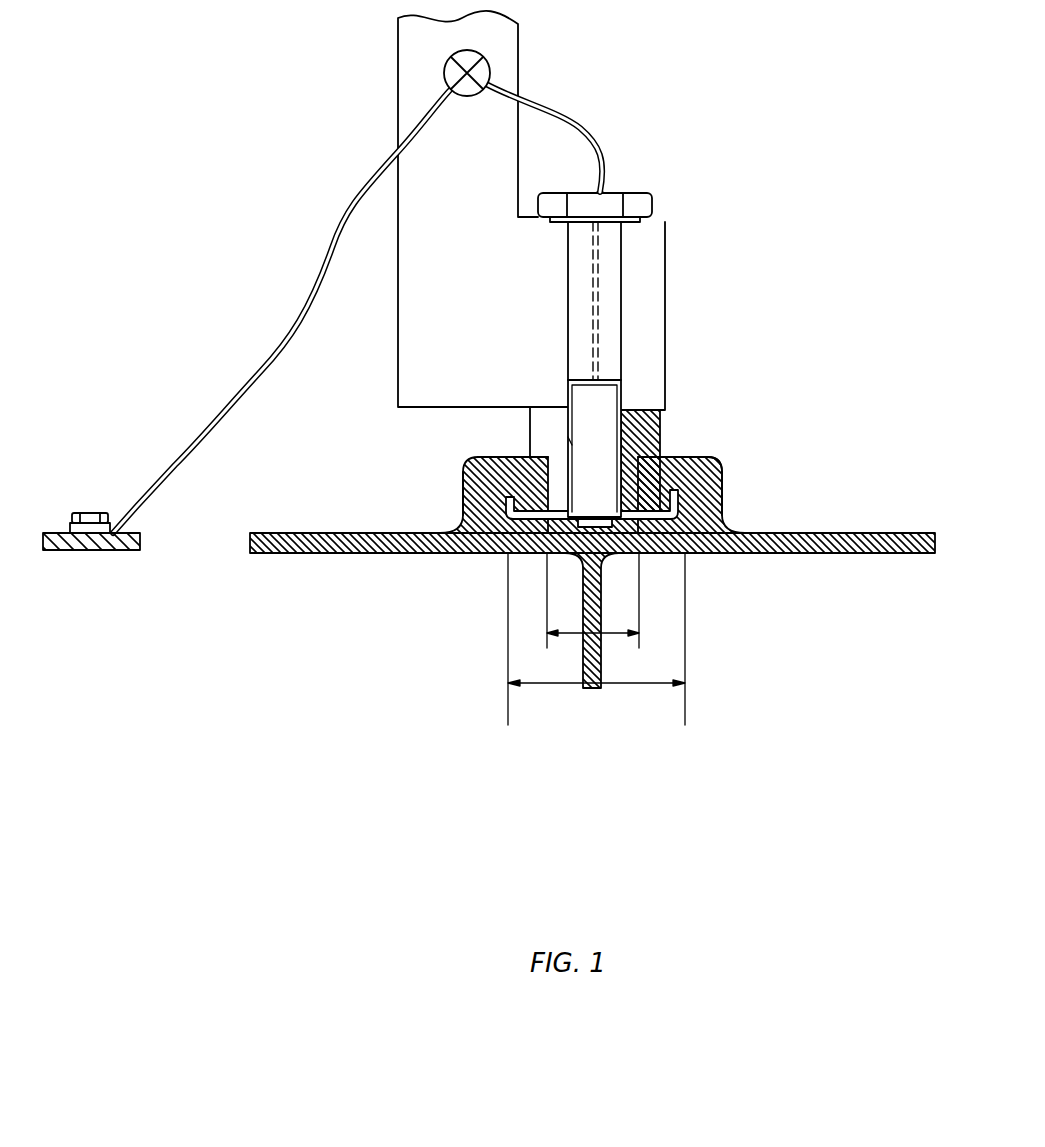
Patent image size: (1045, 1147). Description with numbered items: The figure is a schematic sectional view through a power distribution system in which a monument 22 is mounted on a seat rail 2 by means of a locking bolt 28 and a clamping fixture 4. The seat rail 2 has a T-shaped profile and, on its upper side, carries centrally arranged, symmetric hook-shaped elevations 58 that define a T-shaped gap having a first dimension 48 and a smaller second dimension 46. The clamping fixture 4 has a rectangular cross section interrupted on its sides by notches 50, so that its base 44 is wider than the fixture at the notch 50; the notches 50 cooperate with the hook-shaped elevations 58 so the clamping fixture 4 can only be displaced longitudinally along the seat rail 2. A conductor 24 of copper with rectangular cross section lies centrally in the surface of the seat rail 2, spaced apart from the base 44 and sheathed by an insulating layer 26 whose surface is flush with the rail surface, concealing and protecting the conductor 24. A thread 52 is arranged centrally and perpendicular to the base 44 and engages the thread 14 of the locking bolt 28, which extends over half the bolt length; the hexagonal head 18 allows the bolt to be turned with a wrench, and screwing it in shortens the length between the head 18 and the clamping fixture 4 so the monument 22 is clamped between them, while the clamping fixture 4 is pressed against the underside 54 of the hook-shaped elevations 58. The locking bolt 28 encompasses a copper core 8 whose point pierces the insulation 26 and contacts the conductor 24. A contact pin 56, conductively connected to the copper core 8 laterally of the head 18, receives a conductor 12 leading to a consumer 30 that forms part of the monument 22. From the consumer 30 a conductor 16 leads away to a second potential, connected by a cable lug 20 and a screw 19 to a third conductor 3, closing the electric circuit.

The seat rail 2 is at (787, 535).
The third conductor 3 is at (92, 560).
The clamping fixture 4 is at (540, 428).
The copper core 8 is at (597, 300).
The conductor 12 is at (560, 115).
The thread 14 is at (624, 385).
The conductor 16 is at (314, 287).
The head 18 is at (647, 202).
The screw 19 is at (94, 512).
The cable lug 20 is at (68, 527).
The monument 22 is at (417, 330).
The conductor 24 is at (640, 555).
The insulating layer 26 is at (570, 548).
The locking bolt 28 is at (621, 260).
The consumer 30 is at (487, 62).
The base 44 is at (510, 548).
The second dimension 46 is at (613, 637).
The first dimension 48 is at (550, 688).
The notch 50 is at (667, 450).
The thread 52 is at (570, 443).
The underside 54 is at (720, 462).
The hook-shaped elevations 58 is at (720, 498).
The contact pin 56 is at (603, 188).